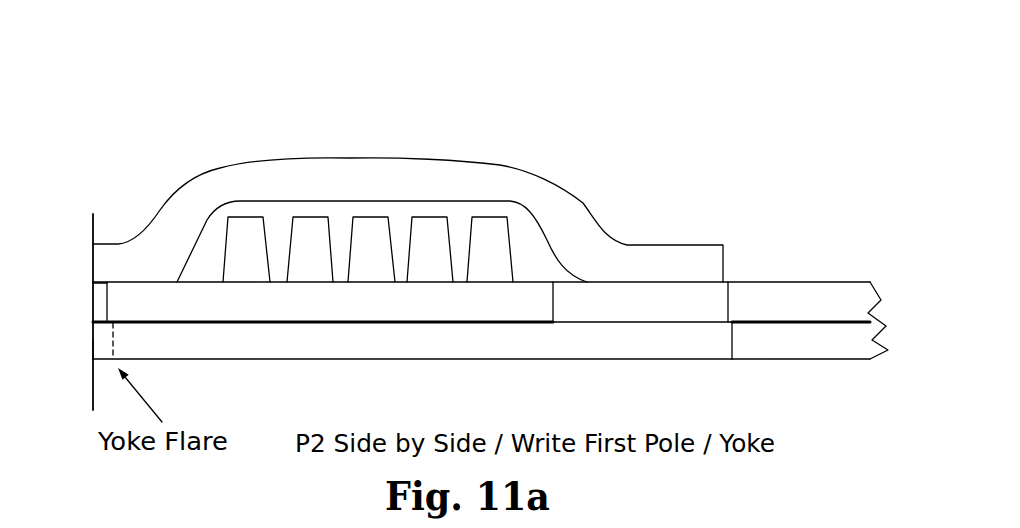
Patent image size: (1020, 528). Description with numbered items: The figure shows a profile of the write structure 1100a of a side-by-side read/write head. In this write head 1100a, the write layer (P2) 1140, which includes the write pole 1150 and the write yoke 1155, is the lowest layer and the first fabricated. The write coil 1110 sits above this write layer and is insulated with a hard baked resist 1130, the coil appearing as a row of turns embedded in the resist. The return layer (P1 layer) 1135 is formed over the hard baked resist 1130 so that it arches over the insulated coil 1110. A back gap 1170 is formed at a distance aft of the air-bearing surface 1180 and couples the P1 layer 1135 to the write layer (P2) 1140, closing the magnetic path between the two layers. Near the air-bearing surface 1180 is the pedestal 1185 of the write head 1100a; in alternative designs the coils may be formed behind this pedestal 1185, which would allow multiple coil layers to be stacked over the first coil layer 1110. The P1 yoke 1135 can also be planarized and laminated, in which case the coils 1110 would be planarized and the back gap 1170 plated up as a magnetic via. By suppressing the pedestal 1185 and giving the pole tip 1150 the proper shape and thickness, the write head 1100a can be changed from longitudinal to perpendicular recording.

The write structure 1100a is at (673, 58).
The write coil 1110 is at (487, 228).
The hard baked resist 1130 is at (395, 223).
The return layer (P1 layer) 1135 is at (178, 203).
The write layer (P2) 1140 is at (561, 368).
The write pole 1150 is at (102, 345).
The write yoke 1155 is at (392, 153).
The back gap 1170 is at (690, 292).
The air-bearing surface 1180 is at (92, 216).
The pedestal 1185 is at (80, 304).